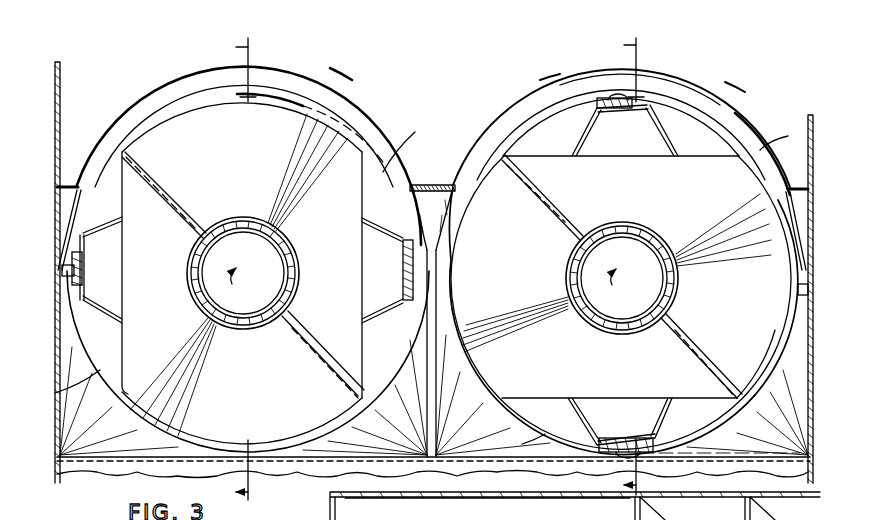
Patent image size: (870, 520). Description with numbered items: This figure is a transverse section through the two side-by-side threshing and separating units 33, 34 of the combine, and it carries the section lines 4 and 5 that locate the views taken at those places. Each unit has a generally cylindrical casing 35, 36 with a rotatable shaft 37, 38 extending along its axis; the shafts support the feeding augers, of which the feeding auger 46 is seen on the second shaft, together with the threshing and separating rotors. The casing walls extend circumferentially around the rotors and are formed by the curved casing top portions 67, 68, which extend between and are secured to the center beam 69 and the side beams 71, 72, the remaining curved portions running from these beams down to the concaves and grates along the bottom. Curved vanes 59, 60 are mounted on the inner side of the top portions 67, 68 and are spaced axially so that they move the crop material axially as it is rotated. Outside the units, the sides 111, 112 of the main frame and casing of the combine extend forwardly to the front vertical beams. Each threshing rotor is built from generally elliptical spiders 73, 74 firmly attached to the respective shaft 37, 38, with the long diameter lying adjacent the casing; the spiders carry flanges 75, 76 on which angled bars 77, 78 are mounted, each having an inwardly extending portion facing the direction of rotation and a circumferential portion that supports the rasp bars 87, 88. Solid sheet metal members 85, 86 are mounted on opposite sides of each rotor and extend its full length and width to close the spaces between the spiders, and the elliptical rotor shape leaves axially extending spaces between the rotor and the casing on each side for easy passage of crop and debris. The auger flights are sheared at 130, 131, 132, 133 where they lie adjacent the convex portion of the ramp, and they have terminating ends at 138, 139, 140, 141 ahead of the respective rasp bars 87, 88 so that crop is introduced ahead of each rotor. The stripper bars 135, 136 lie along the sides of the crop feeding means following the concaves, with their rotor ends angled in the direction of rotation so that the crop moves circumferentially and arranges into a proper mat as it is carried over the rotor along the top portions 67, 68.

The threshing and separating unit 33 is at (202, 64).
The threshing and separating unit 34 is at (743, 88).
The casing 35 is at (346, 83).
The casing 36 is at (538, 78).
The shaft 37 is at (287, 262).
The shaft 38 is at (680, 283).
The feeding auger 46 is at (487, 509).
The curved vane 59 is at (163, 97).
The curved vane 60 is at (737, 120).
The casing top portion 67 is at (292, 76).
The casing top portion 68 is at (672, 76).
The center beam 69 is at (428, 185).
The side beam 71 is at (63, 199).
The side beam 72 is at (812, 265).
The spider 73 is at (70, 267).
The spider 74 is at (600, 160).
The flange 75 is at (120, 322).
The flange 76 is at (662, 125).
The angled bar 77 is at (86, 230).
The angled bar 78 is at (592, 121).
The solid sheet metal member 85 is at (400, 236).
The solid sheet metal member 86 is at (578, 142).
The rasp bar 87 is at (72, 262).
The rasp bar 88 is at (612, 98).
The side of main frame and casing 111 is at (57, 326).
The side of main frame and casing 112 is at (813, 378).
The sheared auger flight portion 130 is at (122, 376).
The sheared auger flight portion 131 is at (362, 348).
The sheared auger flight portion 132 is at (727, 162).
The sheared auger flight portion 133 is at (737, 398).
The stripper bar 135 is at (65, 281).
The stripper bar 136 is at (806, 292).
The auger flight terminating end 138 is at (122, 147).
The auger flight terminating end 139 is at (352, 395).
The auger flight terminating end 140 is at (512, 132).
The auger flight terminating end 141 is at (735, 398).
The section line 4- 4 is at (642, 265).
The section line 5- 5 is at (255, 269).